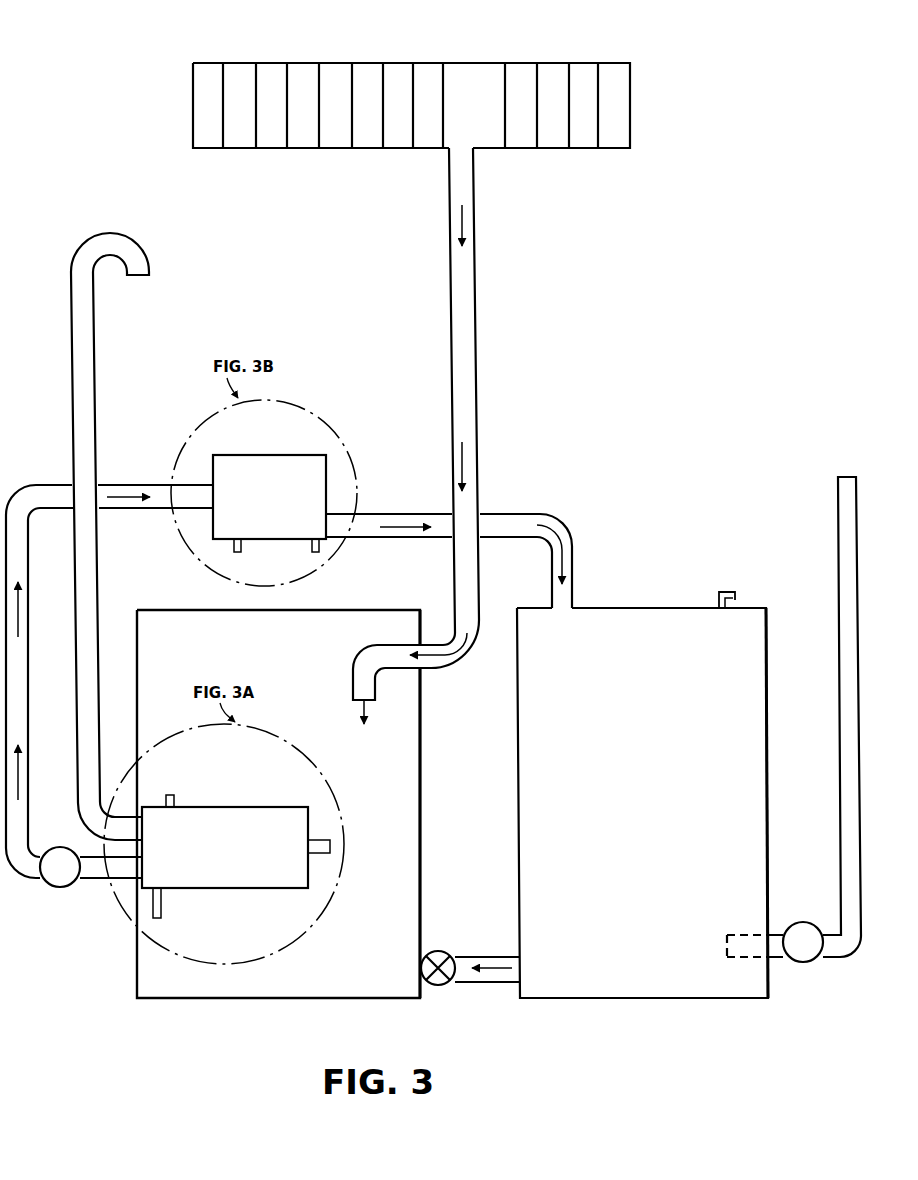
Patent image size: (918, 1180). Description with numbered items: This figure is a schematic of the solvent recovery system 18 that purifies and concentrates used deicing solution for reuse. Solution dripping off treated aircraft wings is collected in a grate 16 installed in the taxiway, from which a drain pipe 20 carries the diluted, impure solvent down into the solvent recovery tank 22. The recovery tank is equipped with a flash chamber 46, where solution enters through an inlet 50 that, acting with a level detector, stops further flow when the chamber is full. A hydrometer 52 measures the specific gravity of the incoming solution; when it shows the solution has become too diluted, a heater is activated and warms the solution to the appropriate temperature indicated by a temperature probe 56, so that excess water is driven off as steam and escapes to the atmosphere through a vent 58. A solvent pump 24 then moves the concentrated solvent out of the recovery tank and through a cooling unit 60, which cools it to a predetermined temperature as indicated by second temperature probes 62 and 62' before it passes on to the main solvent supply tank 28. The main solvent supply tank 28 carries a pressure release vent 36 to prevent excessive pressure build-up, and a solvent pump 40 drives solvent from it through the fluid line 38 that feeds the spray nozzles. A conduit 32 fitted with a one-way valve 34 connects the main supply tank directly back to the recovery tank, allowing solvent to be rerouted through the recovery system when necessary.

The grate 16 is at (494, 92).
The solvent recovery system 18 is at (710, 173).
The drain pipe 20 is at (462, 303).
The solvent recovery tank 22 is at (403, 755).
The solvent pump 24 is at (65, 878).
The hot water tank 28 is at (642, 768).
The transfer conduit 32 is at (500, 975).
The one-way valve 34 is at (440, 953).
The pressure release vent 36 is at (730, 588).
The fluid line 38 is at (848, 677).
The solvent pump 40 is at (800, 920).
The flash chamber 46 is at (235, 851).
The inlet 50 is at (320, 843).
The hydrometer 52 is at (161, 910).
The temperature probe 56 is at (177, 797).
The vent 58 is at (82, 372).
The cooling unit 60 is at (284, 507).
The second temperature probe 62 is at (254, 557).
The second temperature probe 62' is at (349, 557).